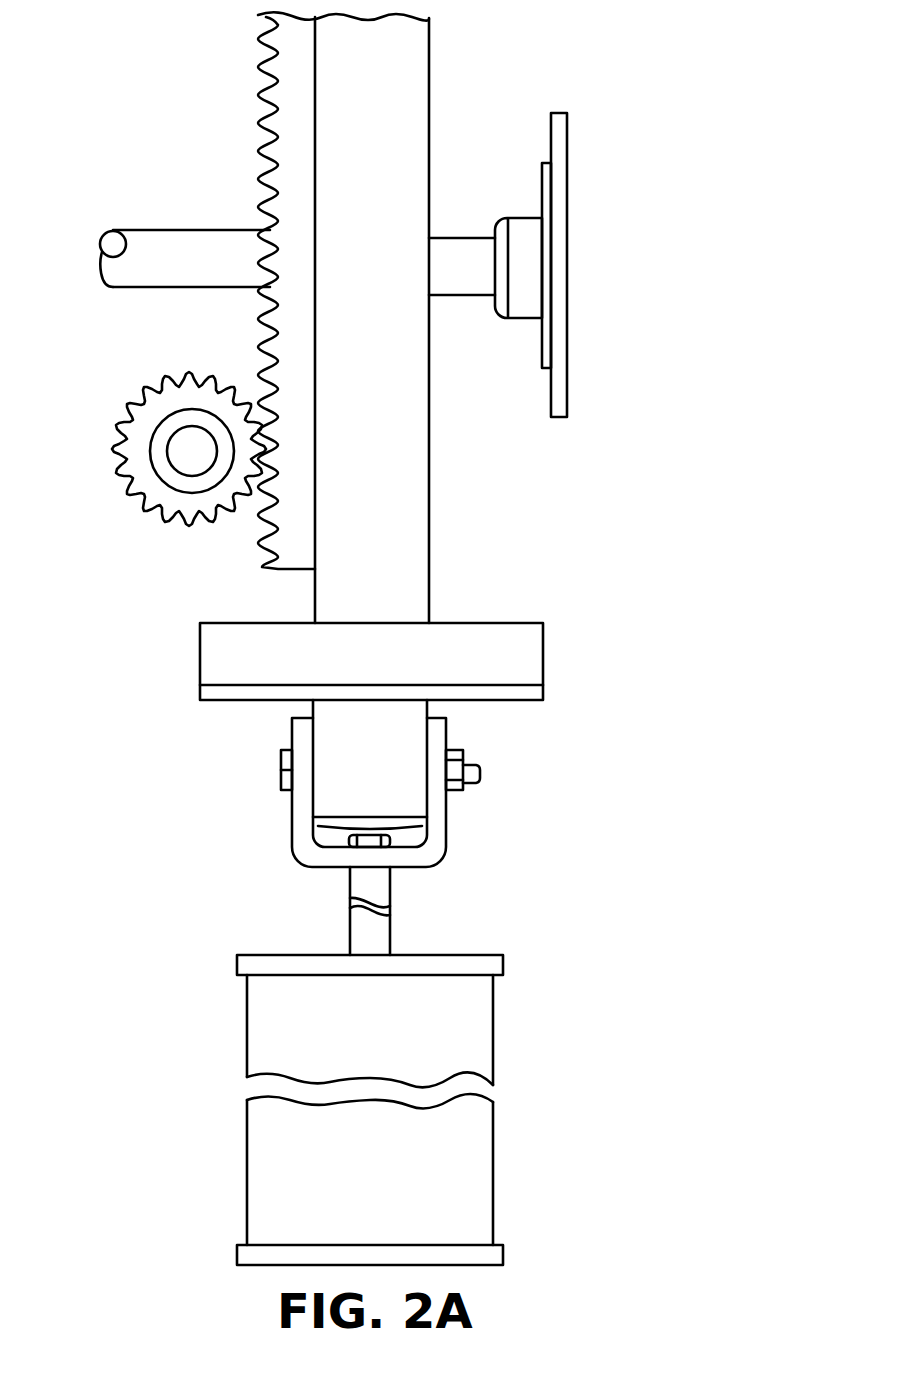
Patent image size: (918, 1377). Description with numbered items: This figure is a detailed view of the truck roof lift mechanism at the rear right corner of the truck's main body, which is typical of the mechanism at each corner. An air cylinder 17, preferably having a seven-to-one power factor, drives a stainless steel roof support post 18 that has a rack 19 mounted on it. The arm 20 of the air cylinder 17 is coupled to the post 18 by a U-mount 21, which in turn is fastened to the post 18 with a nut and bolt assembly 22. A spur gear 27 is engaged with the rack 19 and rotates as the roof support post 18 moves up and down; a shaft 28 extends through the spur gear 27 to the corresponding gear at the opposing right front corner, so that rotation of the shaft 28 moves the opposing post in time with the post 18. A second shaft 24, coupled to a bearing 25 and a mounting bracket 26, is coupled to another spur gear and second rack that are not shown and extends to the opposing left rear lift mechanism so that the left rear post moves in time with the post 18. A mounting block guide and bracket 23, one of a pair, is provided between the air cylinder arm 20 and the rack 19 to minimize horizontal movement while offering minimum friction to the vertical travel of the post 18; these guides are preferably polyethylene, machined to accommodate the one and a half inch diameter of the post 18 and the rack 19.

The air cylinder 17 is at (470, 1033).
The roof support post 18 is at (405, 67).
The rack 19 is at (283, 560).
The arm 20 is at (360, 932).
The U-mount 21 is at (437, 845).
The nut and bolt assembly 22 is at (480, 783).
The mounting block guide and bracket 23 is at (527, 647).
The second shaft 24 is at (167, 242).
The bearing 25 is at (519, 233).
The mounting bracket 26 is at (558, 337).
The spur gear 27 is at (150, 494).
The shaft 28 is at (178, 446).